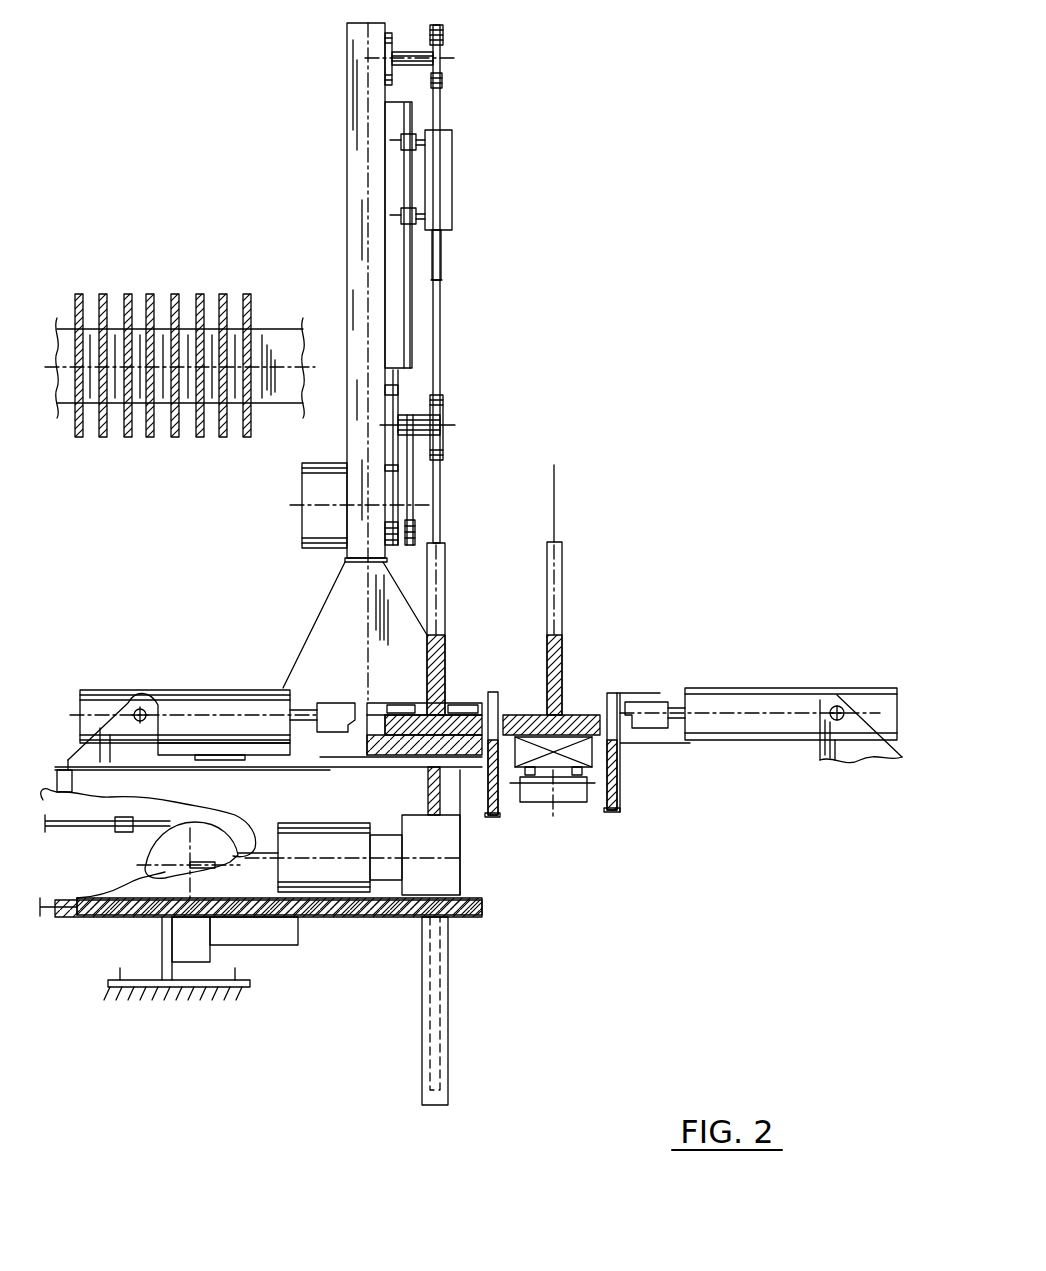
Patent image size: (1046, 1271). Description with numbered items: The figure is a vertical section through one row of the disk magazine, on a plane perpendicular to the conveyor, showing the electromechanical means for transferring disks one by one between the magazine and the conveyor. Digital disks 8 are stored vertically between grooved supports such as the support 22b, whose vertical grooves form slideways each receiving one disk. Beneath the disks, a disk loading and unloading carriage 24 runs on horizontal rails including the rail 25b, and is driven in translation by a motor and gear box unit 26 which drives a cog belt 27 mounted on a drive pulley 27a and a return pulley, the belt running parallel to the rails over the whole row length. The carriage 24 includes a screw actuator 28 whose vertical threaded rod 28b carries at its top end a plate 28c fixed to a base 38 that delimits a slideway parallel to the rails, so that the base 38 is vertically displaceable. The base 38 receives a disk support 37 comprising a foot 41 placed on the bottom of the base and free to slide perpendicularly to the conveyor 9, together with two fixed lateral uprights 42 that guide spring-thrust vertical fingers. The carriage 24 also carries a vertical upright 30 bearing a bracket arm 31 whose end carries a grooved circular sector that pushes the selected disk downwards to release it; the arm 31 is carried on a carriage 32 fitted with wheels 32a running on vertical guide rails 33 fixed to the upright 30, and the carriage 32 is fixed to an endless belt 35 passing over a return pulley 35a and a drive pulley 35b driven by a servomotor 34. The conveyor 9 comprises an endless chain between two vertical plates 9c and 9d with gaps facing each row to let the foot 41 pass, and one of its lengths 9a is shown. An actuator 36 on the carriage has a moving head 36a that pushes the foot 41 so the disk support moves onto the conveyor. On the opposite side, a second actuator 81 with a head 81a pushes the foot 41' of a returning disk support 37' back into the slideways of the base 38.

The digital disks 8 is at (150, 294).
The support 22b is at (272, 345).
The disk loading and unloading carriage 24 is at (470, 917).
The horizontal rail 25b is at (72, 780).
The motor and gear box unit 26 is at (190, 965).
The cog belt 27 is at (60, 918).
The drive pulley 27a is at (165, 860).
The screw actuator 28 is at (410, 897).
The threaded rod 28b is at (428, 800).
The plate 28c is at (465, 772).
The vertical upright 30 is at (355, 440).
The bracket arm 31 is at (442, 250).
The carriage 32 is at (435, 175).
The wheels 32a is at (401, 142).
The vertical guide rails 33 is at (405, 262).
The servomotor 34 is at (300, 520).
The endless belt 35 is at (440, 350).
The return pulley 35a is at (443, 35).
The drive pulley 35b is at (443, 407).
The actuator 36 is at (185, 700).
The moving head 36a is at (335, 703).
The disk support 37 is at (495, 556).
The disk support 37' is at (594, 590).
The base 38 is at (373, 710).
The foot 41 is at (483, 732).
The foot 41' is at (626, 730).
The fixed lateral uprights 42 is at (442, 550).
The conveyor 9 is at (592, 806).
The length of the conveyor 9a is at (600, 782).
The vertical plate 9c is at (500, 712).
The vertical plate 9d is at (640, 692).
The second actuator 81 is at (790, 700).
The head 81a is at (655, 735).